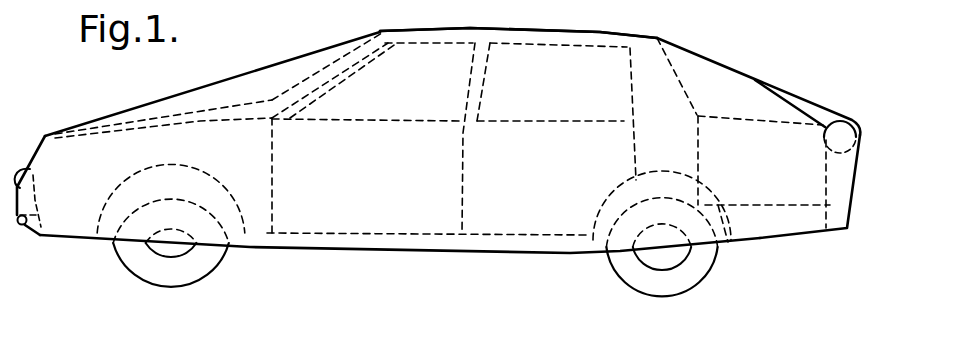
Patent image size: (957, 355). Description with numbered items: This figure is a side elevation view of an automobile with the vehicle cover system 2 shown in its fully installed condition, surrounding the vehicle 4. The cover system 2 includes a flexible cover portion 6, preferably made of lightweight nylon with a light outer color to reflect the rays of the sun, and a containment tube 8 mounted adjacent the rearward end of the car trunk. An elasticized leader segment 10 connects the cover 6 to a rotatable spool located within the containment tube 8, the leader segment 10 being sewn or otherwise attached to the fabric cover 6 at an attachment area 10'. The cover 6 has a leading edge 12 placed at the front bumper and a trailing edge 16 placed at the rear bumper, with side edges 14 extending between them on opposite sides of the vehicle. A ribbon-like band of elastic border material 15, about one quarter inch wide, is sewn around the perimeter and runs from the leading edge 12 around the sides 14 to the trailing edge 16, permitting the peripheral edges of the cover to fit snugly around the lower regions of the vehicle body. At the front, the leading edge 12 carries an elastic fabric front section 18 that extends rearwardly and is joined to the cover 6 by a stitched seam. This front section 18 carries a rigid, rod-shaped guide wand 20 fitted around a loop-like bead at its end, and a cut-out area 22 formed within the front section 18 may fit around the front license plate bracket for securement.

The vehicle cover system 2 is at (803, 80).
The vehicle 4 is at (657, 85).
The flexible cover portion 6 is at (258, 68).
The containment tube 8 is at (827, 145).
The elasticized leader segment 10 is at (768, 103).
The attachment area 10' is at (758, 86).
The leading edge 12 is at (37, 229).
The side edges 14 is at (434, 246).
The elastic border material 15 is at (339, 250).
The trailing edge 16 is at (833, 229).
The elastic fabric front section 18 is at (28, 164).
The guide wand 20 is at (20, 226).
The cut-out area 22 is at (33, 171).